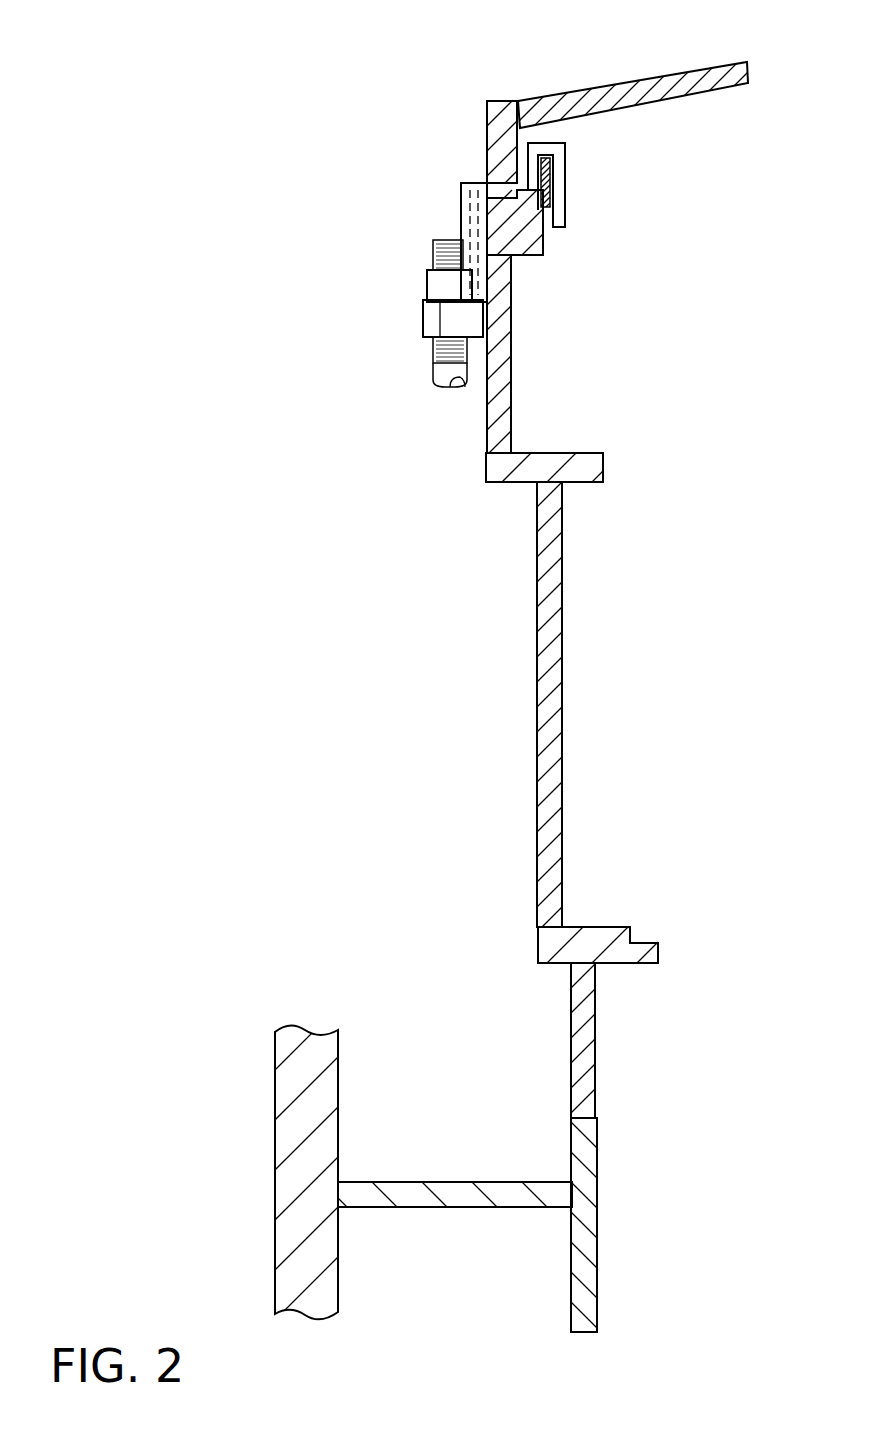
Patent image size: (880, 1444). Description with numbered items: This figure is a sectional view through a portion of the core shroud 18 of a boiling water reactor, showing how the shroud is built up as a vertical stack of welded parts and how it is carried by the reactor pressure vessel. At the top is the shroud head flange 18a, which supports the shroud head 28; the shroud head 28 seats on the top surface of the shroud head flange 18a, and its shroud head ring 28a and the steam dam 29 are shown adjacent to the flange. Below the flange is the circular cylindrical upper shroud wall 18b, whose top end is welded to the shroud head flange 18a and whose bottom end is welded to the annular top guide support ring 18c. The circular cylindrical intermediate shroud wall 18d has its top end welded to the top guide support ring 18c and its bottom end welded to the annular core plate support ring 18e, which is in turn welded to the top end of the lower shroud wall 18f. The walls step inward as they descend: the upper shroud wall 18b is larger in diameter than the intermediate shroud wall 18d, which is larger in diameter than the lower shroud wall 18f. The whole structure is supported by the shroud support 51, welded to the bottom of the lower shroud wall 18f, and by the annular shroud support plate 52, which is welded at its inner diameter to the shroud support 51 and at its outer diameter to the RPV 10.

The RPV 10 is at (262, 1140).
The core shroud 18 is at (611, 704).
The shroud head flange 18a is at (545, 250).
The upper shroud wall 18b is at (512, 413).
The top guide support ring 18c is at (498, 486).
The intermediate shroud wall 18d is at (563, 798).
The core plate support ring 18e is at (537, 947).
The lower shroud wall 18f is at (572, 1048).
The shroud head 28 is at (605, 78).
The shroud head ring 28a is at (490, 143).
The steam dam 29 is at (547, 162).
The shroud support 51 is at (597, 1245).
The shroud support plate 52 is at (433, 1208).